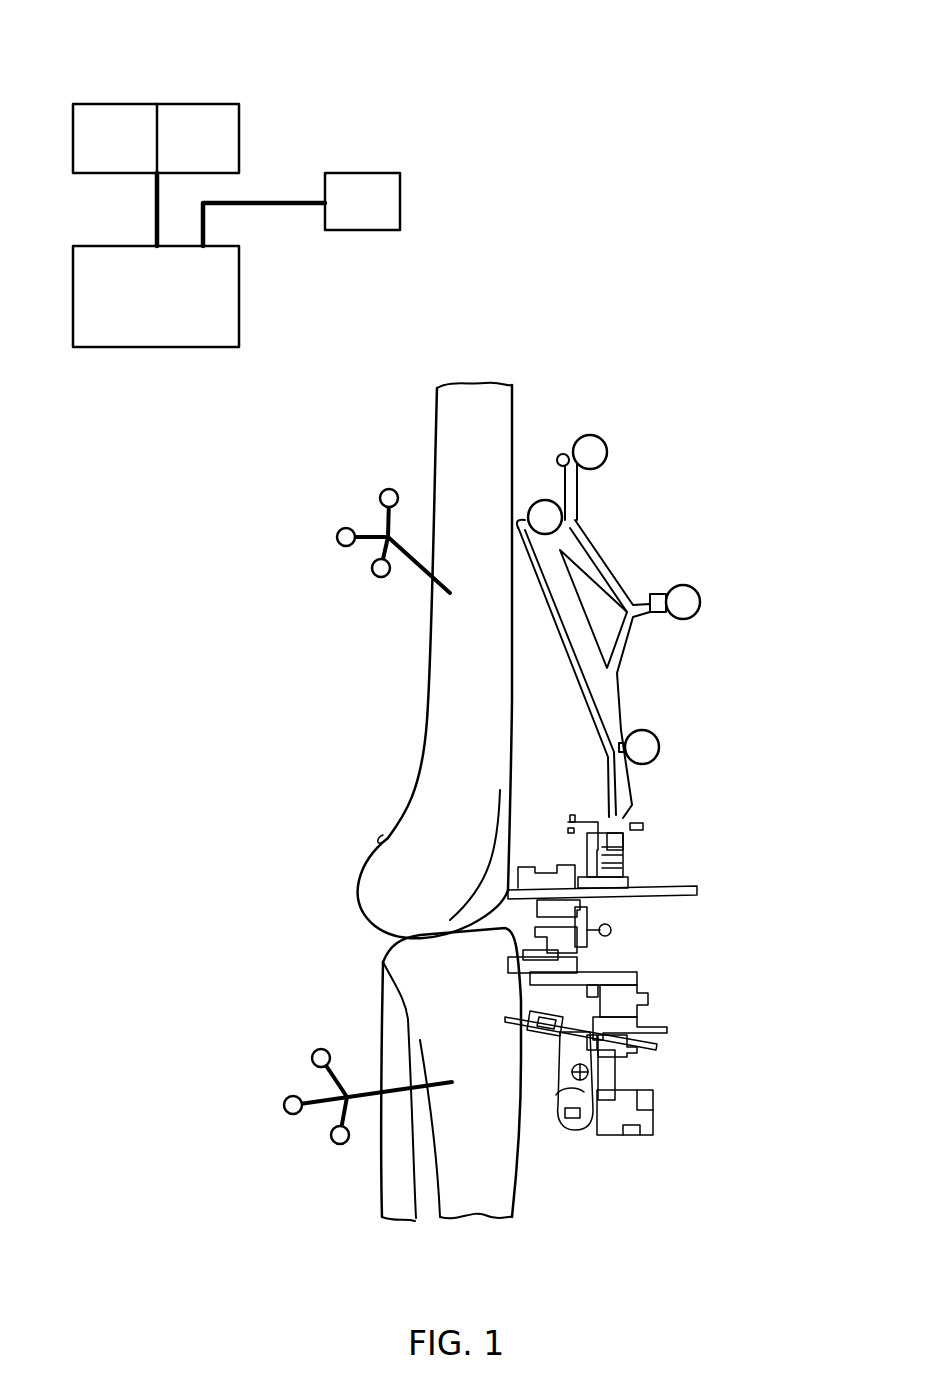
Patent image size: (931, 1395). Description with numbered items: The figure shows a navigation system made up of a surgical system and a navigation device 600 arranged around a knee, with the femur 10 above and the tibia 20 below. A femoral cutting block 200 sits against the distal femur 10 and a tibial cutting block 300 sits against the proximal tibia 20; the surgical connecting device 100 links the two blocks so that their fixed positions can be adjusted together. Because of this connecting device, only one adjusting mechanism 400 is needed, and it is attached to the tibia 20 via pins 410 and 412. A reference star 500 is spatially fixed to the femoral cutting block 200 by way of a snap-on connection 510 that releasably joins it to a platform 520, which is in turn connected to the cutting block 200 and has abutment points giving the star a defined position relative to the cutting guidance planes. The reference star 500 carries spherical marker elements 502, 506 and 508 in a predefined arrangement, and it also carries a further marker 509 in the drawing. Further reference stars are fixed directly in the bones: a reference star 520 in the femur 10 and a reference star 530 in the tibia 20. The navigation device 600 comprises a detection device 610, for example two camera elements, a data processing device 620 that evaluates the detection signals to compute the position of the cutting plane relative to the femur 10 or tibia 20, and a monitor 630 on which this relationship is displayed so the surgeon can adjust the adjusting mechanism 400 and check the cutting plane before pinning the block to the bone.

The femur 10 is at (453, 738).
The tibia 20 is at (453, 1172).
The surgical connecting device 100 is at (637, 928).
The femoral cutting block 200 is at (495, 893).
The tibial cutting block 300 is at (490, 966).
The adjusting mechanism 400 is at (664, 1086).
The pin 410 is at (647, 1050).
The pin 412 is at (653, 1033).
The reference star 500 is at (662, 634).
The marker element 502 is at (685, 602).
The marker element 506 is at (592, 450).
The marker element 508 is at (545, 517).
The tracker marker sphere 509 is at (640, 748).
The snap-on connection 510 is at (615, 846).
The platform 520 is at (327, 548).
The reference star 530 is at (273, 1118).
The navigation device 600 is at (313, 173).
The detection device 610 is at (240, 133).
The data processing device 620 is at (240, 285).
The monitor 630 is at (402, 200).